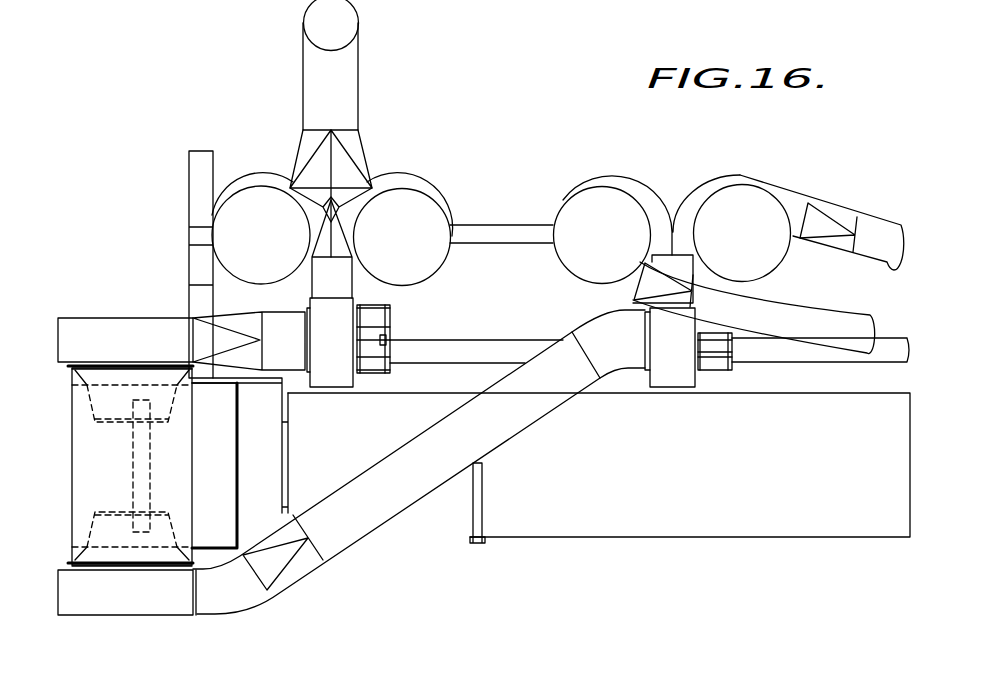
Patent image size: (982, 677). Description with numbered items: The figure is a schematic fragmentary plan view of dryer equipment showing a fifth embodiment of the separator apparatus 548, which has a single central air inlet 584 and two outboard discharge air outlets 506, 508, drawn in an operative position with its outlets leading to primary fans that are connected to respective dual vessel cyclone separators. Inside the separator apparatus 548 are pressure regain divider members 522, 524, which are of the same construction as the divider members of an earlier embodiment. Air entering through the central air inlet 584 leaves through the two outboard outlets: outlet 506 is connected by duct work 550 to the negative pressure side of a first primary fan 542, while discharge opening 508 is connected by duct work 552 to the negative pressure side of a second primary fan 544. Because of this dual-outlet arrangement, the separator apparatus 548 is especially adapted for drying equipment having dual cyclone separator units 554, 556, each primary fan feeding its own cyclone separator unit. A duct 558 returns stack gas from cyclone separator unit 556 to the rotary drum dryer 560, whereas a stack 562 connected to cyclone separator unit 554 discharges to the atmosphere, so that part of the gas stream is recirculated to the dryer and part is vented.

The discharge air outlet 506 is at (197, 588).
The discharge air outlet 508 is at (196, 335).
The pressure regain divider member 522 is at (118, 412).
The pressure regain divider member 524 is at (104, 518).
The first primary fan 542 is at (672, 375).
The second primary fan 544 is at (330, 377).
The separator apparatus 548 is at (93, 305).
The duct work 550 is at (513, 427).
The duct work 552 is at (277, 320).
The cyclone separator unit 554 is at (415, 178).
The cyclone separator unit 556 is at (708, 177).
The duct 558 is at (880, 225).
The rotary drum dryer 560 is at (752, 527).
The stack 562 is at (348, 68).
The central air inlet 584 is at (225, 458).